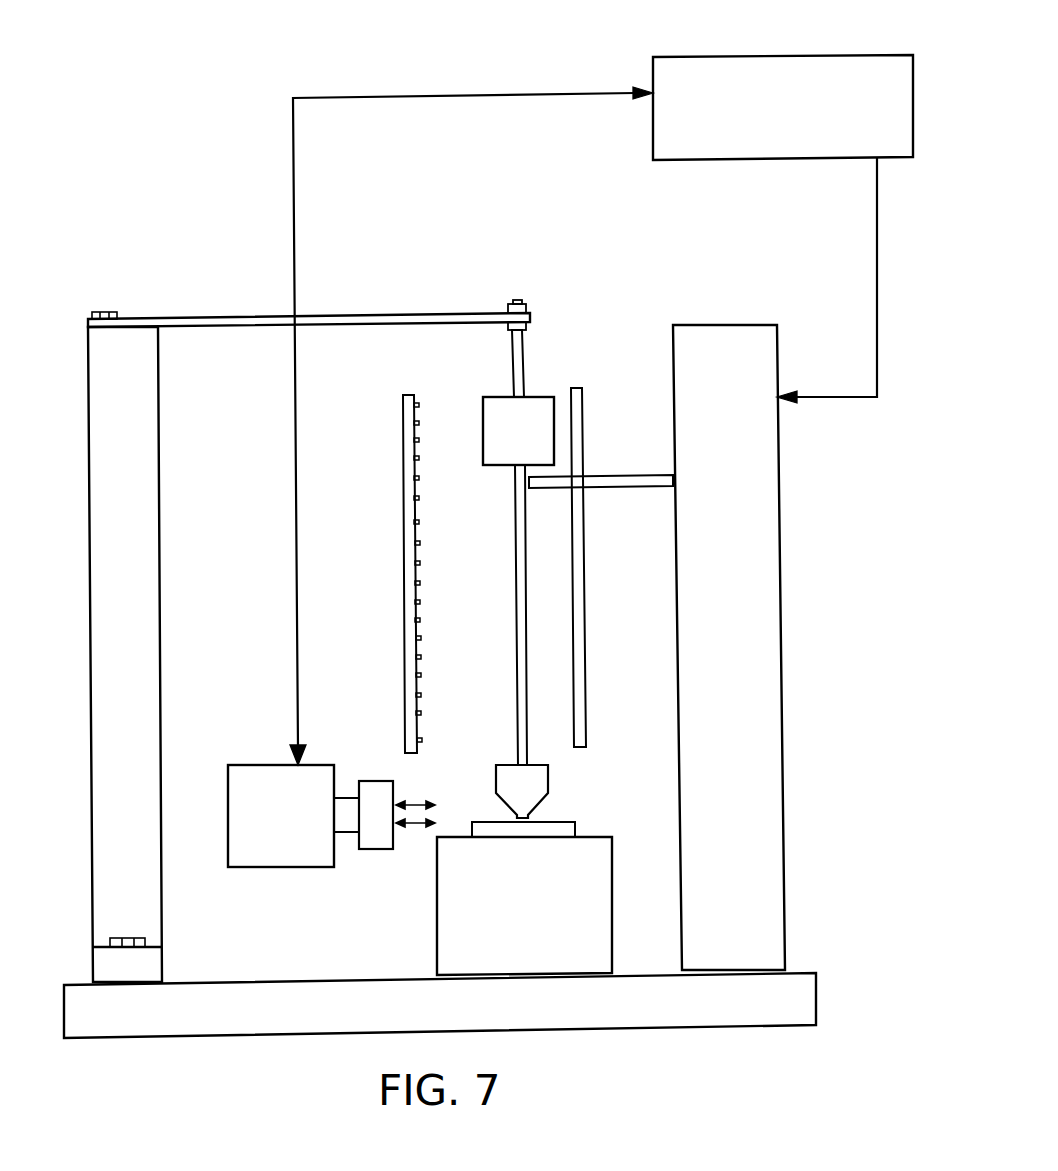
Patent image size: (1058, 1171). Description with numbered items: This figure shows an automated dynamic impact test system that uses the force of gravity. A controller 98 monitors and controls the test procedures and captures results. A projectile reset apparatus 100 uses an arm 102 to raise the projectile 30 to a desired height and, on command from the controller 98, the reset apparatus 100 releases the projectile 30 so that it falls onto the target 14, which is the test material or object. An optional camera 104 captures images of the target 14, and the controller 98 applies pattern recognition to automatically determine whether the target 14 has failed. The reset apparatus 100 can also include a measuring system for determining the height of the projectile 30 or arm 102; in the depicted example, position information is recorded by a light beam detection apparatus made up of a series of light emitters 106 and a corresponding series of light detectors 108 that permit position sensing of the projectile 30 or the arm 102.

The controller 98 is at (797, 55).
The projectile reset apparatus 100 is at (781, 612).
The arm 102 is at (605, 488).
The light detectors 108 is at (582, 405).
The projectile 30 is at (530, 397).
The target 14 is at (566, 828).
The light emitters 106 is at (403, 437).
The camera 104 is at (263, 765).